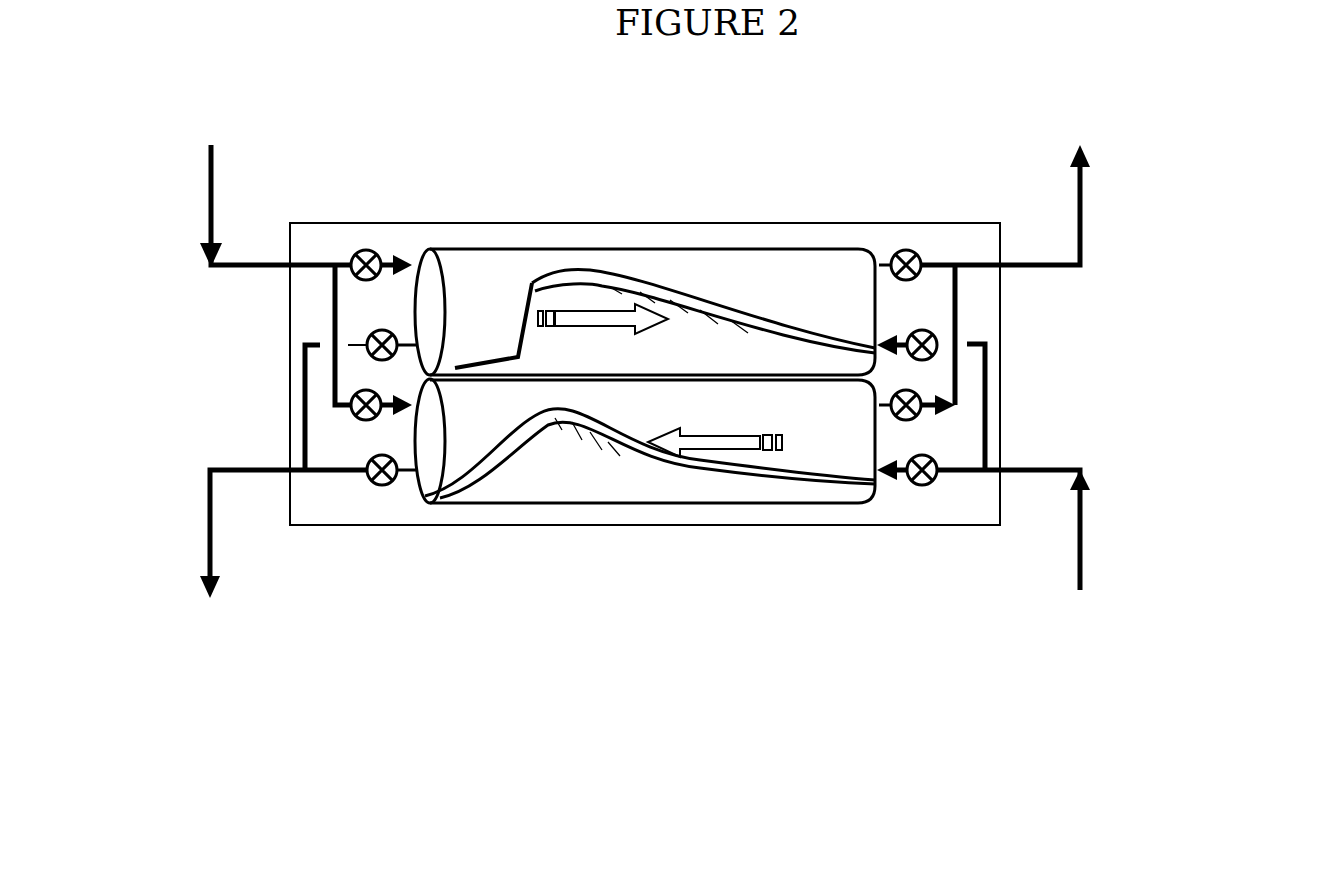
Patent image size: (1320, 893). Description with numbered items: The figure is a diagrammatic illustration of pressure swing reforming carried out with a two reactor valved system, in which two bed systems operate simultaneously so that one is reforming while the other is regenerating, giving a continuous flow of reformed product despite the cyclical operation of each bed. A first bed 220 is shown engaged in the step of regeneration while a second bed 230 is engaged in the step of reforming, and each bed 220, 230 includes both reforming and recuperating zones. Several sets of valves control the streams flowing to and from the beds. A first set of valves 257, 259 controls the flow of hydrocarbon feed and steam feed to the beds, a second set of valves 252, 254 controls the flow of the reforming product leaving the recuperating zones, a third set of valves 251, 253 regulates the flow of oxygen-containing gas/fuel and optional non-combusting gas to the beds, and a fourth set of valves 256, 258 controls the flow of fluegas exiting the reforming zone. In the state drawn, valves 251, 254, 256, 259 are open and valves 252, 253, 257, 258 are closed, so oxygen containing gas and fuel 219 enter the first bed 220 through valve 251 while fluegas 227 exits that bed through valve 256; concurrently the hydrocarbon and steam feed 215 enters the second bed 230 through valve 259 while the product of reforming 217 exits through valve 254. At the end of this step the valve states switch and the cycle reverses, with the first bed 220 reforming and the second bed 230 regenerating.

The hydrocarbon and steam feed 215 is at (1083, 514).
The product of reforming 217 is at (208, 493).
The oxygen containing gas and fuel 219 is at (208, 222).
The first bed 220 is at (708, 278).
The fluegas 227 is at (1085, 237).
The second bed 230 is at (590, 470).
The valve 251 is at (345, 270).
The valve 252 is at (348, 345).
The valve 253 is at (352, 414).
The valve 254 is at (368, 456).
The valve 256 is at (930, 270).
The valve 257 is at (937, 348).
The valve 258 is at (918, 394).
The valve 259 is at (935, 457).